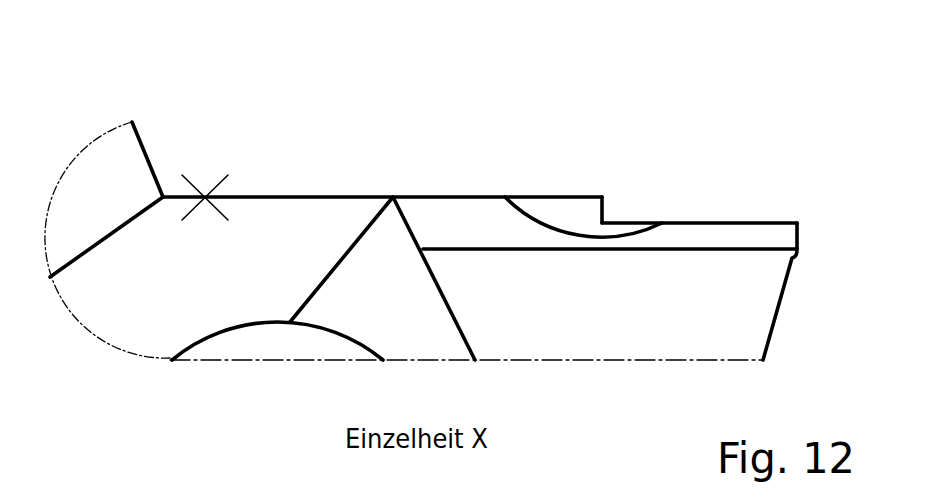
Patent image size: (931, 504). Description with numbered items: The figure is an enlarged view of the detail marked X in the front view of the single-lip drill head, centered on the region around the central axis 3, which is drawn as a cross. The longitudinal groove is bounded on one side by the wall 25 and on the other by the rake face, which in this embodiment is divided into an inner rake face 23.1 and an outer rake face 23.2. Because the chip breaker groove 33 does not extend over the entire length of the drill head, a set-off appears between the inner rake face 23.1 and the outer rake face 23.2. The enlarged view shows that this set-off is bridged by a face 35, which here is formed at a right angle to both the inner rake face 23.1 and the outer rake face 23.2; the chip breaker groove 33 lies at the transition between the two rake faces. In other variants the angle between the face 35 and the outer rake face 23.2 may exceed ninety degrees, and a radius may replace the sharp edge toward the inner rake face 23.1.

The wall 25 is at (138, 125).
The central axis 3 is at (205, 197).
The inner rake face 23.1 is at (448, 197).
The chip breaker groove 33 is at (565, 228).
The face 35 is at (604, 210).
The outer rake face 23.2 is at (707, 223).